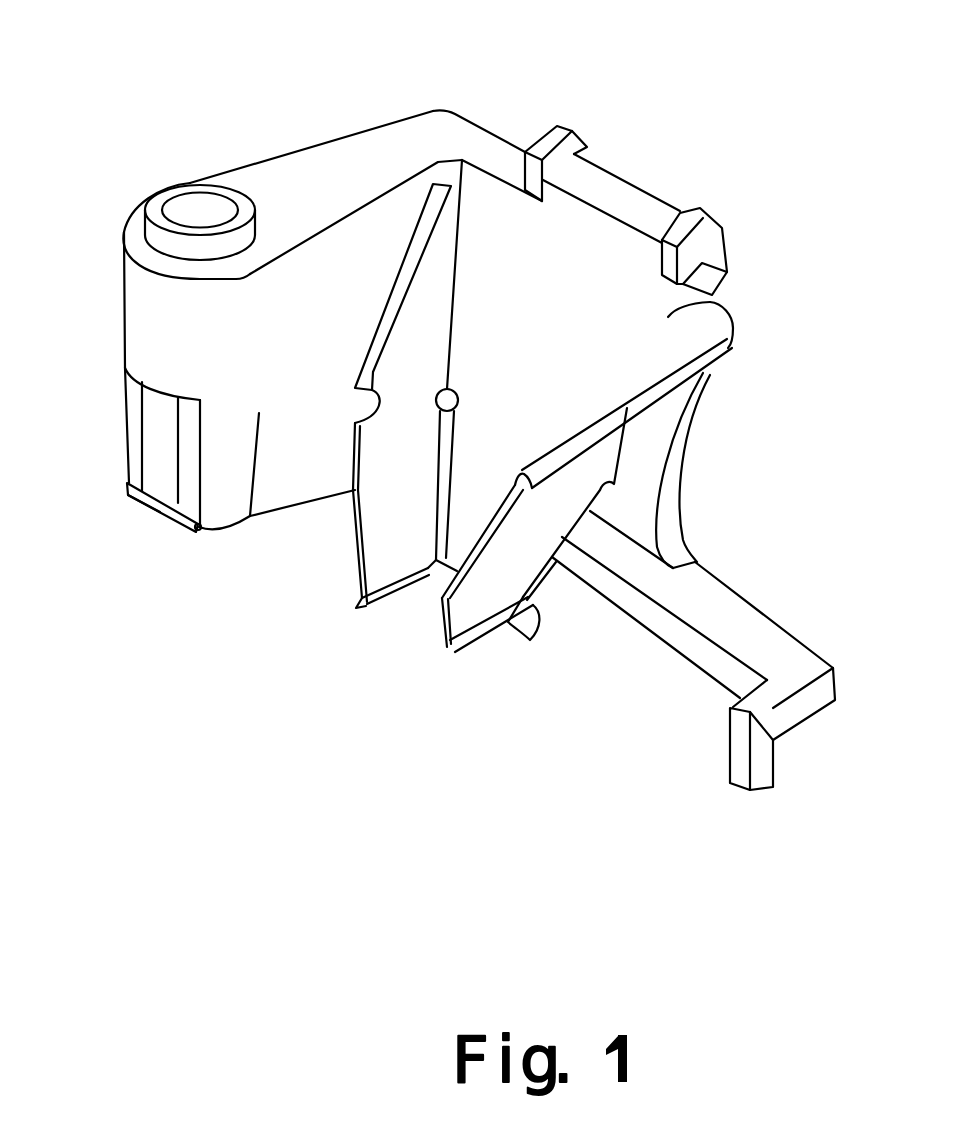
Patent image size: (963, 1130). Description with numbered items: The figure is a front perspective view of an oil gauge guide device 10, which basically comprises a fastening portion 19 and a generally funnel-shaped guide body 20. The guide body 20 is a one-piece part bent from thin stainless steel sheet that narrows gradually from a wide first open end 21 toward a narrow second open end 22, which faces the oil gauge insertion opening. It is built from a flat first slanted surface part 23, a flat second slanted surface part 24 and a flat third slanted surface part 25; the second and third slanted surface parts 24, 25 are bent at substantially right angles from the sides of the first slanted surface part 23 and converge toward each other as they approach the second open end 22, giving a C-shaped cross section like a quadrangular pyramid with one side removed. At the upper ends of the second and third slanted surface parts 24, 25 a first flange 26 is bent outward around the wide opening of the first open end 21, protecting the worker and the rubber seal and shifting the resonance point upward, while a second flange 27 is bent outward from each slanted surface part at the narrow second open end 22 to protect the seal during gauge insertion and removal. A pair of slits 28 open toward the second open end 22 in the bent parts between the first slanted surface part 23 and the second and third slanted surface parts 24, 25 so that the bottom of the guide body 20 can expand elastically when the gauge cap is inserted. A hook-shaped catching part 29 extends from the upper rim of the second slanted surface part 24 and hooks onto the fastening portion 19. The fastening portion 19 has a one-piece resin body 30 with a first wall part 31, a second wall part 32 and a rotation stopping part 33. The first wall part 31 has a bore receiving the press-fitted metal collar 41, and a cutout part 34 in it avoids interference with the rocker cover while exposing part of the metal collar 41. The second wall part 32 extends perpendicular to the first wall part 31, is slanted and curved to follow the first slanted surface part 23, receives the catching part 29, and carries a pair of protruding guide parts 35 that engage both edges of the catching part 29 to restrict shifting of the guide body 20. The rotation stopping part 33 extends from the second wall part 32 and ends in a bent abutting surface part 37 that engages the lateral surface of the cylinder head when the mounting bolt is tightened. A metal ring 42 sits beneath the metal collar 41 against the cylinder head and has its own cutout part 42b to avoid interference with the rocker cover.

The oil gauge guide device 10 is at (208, 639).
The fastening portion 19 is at (126, 200).
The guide body 20 is at (475, 655).
The first open end 21 is at (600, 352).
The second open end 22 is at (423, 603).
The first slanted surface part 23 is at (710, 302).
The second slanted surface part 24 is at (383, 533).
The third slanted surface part 25 is at (532, 552).
The first flange 26 is at (407, 265).
The second flange 27 is at (375, 605).
The slit 28 is at (452, 428).
The catching part 29 is at (639, 185).
The resin body 30 is at (366, 142).
The first wall part 31 is at (267, 160).
The second wall part 32 is at (484, 128).
The rotation stopping part 33 is at (758, 620).
The cutout part 34 is at (130, 443).
The protruding guide part 35 is at (553, 120).
The abutting surface part 37 is at (740, 790).
The metal collar 41 is at (190, 183).
The metal ring 42 is at (173, 530).
The cutout part 42b is at (140, 509).